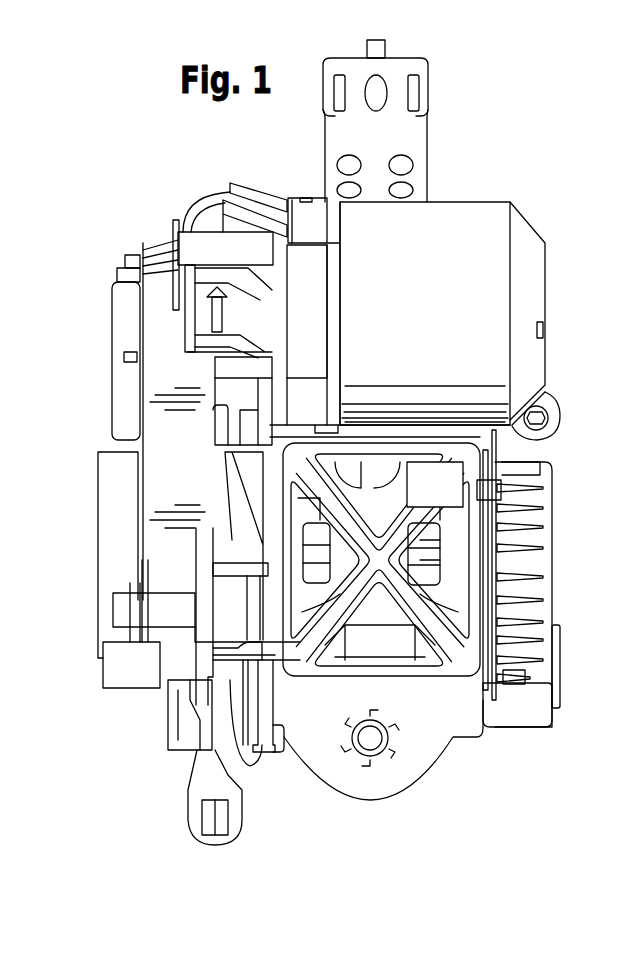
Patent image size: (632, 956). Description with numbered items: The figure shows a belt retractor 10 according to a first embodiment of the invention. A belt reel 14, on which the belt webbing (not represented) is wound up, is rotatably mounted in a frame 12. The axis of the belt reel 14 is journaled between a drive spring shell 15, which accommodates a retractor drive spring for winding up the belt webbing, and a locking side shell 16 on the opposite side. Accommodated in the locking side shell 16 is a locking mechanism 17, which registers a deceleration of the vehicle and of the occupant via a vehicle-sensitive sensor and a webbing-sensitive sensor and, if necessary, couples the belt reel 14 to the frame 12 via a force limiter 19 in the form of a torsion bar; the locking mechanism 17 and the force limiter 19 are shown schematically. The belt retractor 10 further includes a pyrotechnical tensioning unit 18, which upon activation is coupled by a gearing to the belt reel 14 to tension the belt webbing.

The belt retractor 10 is at (329, 403).
The frame 12 is at (425, 740).
The belt reel 14 is at (448, 576).
The drive spring shell 15 is at (110, 554).
The locking side shell 16 is at (538, 504).
The locking mechanism 17 is at (515, 681).
The pyrotechnical tensioning unit 18 is at (166, 711).
The force limiter 19 is at (430, 553).